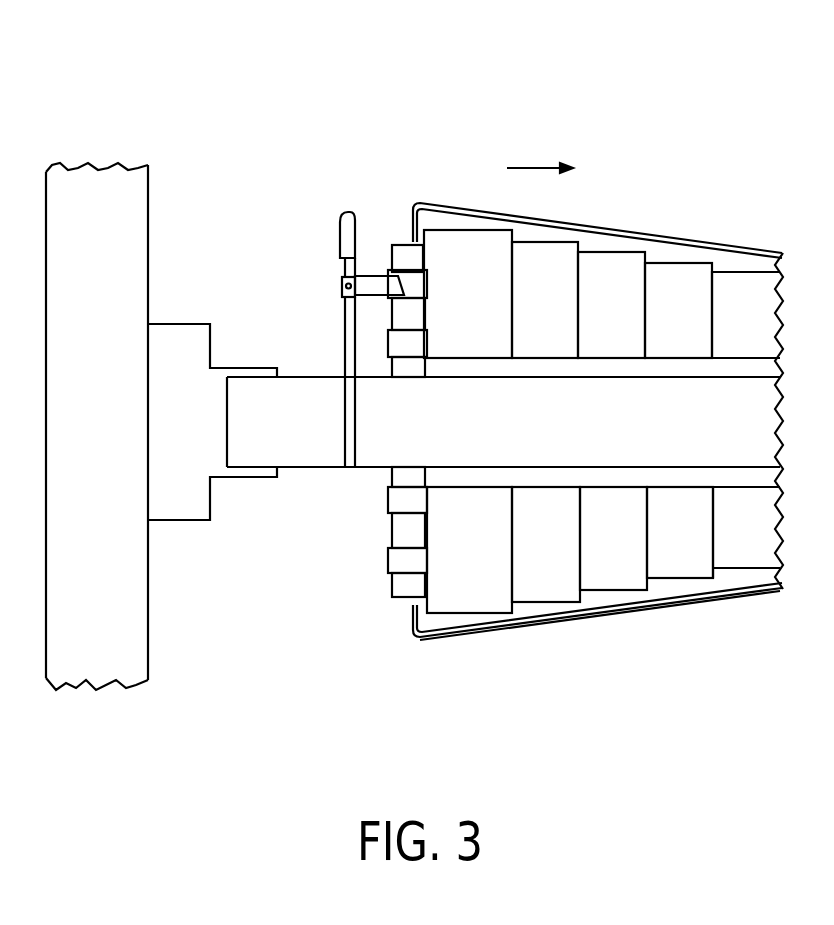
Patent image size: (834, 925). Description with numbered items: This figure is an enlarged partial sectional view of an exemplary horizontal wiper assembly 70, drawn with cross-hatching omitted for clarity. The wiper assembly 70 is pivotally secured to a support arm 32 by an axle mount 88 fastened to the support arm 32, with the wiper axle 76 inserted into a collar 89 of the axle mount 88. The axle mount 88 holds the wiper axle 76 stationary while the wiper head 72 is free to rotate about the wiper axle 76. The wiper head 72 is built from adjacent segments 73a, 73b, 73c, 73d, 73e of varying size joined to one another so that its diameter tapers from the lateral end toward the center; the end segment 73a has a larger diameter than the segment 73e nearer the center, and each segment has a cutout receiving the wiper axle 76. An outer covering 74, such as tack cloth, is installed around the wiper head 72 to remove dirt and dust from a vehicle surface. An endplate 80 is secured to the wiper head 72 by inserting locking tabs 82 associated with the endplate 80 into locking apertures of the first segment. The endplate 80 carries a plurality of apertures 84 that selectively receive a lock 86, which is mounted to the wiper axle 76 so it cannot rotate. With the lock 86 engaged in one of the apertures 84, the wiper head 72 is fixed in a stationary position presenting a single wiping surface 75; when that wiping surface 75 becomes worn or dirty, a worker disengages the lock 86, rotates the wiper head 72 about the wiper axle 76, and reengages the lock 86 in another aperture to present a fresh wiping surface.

The wiper assembly 70 is at (417, 92).
The support arm 32 is at (148, 212).
The axle mount 88 is at (180, 326).
The collar 89 is at (258, 478).
The wiper axle 76 is at (304, 468).
The lock 86 is at (324, 303).
The apertures 84 is at (395, 260).
The endplate 80 is at (392, 592).
The outer covering 74 is at (410, 220).
The wiping surface 75 is at (626, 612).
The locking tabs 82 is at (452, 312).
The wiper head 72 is at (600, 676).
The segment 73a is at (469, 550).
The segment 73b is at (546, 544).
The segment 73c is at (613, 538).
The segment 73d is at (680, 532).
The segment 73e is at (746, 532).